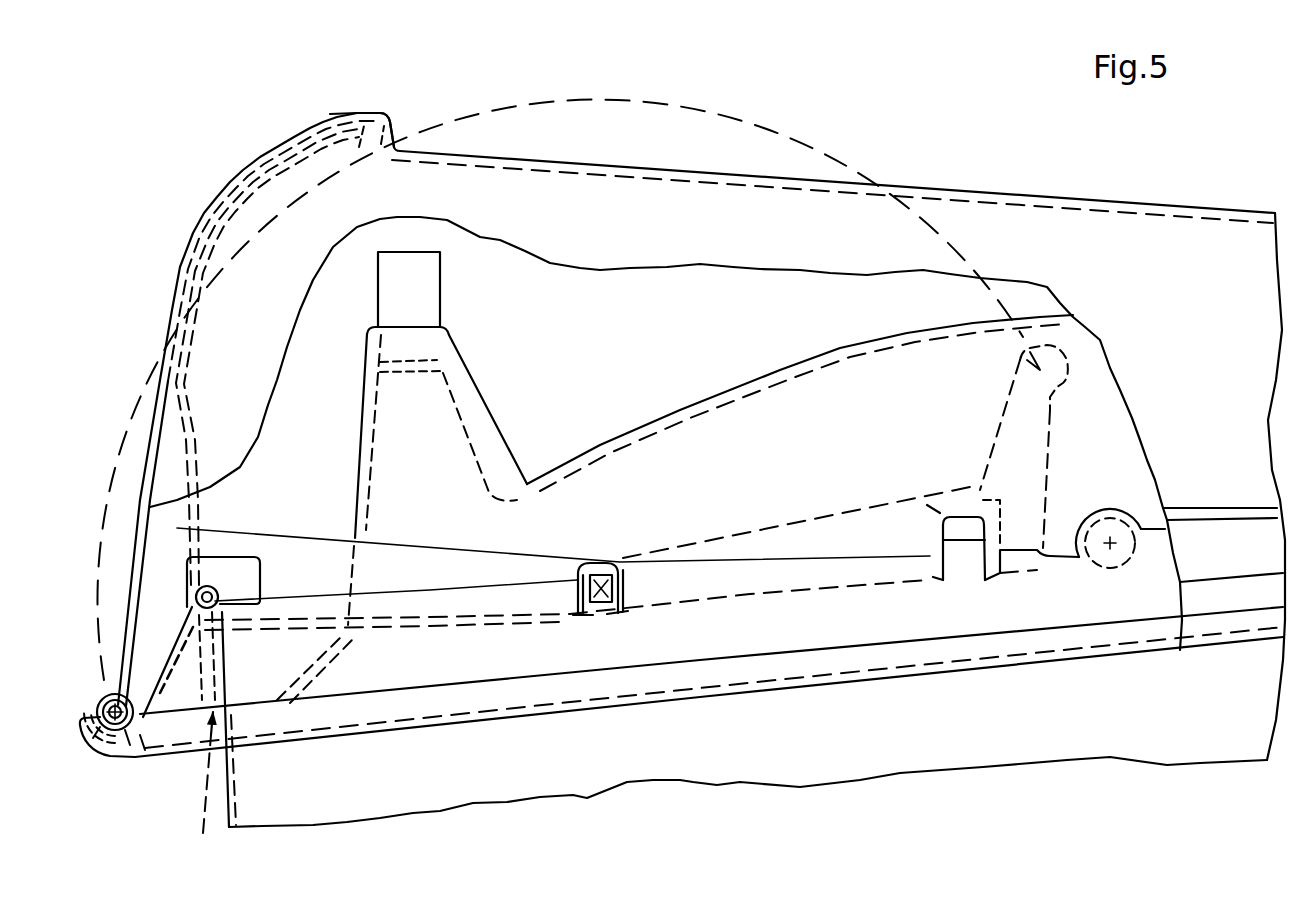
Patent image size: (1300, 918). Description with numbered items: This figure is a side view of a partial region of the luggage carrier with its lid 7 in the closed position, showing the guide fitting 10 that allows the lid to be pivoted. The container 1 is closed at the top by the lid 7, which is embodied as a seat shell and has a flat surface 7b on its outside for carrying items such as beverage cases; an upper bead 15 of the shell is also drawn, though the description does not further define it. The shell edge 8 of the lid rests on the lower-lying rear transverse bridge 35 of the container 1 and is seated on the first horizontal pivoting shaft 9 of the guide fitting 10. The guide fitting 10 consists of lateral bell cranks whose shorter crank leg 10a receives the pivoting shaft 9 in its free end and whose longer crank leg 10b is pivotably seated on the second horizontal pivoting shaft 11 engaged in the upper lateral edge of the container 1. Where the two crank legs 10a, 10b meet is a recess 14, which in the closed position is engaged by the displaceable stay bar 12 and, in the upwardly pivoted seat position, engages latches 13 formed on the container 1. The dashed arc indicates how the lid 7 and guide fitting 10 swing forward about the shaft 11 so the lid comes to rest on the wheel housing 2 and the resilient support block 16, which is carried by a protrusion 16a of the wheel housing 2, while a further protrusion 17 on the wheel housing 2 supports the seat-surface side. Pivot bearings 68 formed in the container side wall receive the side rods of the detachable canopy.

The container 1 is at (797, 757).
The wheel housing 2 is at (748, 415).
The lid 7 is at (1035, 238).
The flat surface 7b is at (882, 185).
The shell edge 8 is at (97, 708).
The first horizontal pivoting shaft 9 is at (92, 747).
The guide fitting 10 is at (503, 550).
The shorter crank leg 10a is at (163, 615).
The longer crank leg 10b is at (397, 567).
The second horizontal pivoting shaft 11 is at (612, 566).
The stay bar 12 is at (194, 594).
The latches 13 is at (968, 542).
The recess 14 is at (223, 577).
The hood bead 15 is at (355, 144).
The support block 16 is at (432, 283).
The protrusion 16a is at (392, 458).
The protrusion 17 is at (200, 513).
The rear transverse bridge 35 is at (262, 746).
The pivot bearings 68 is at (1107, 545).